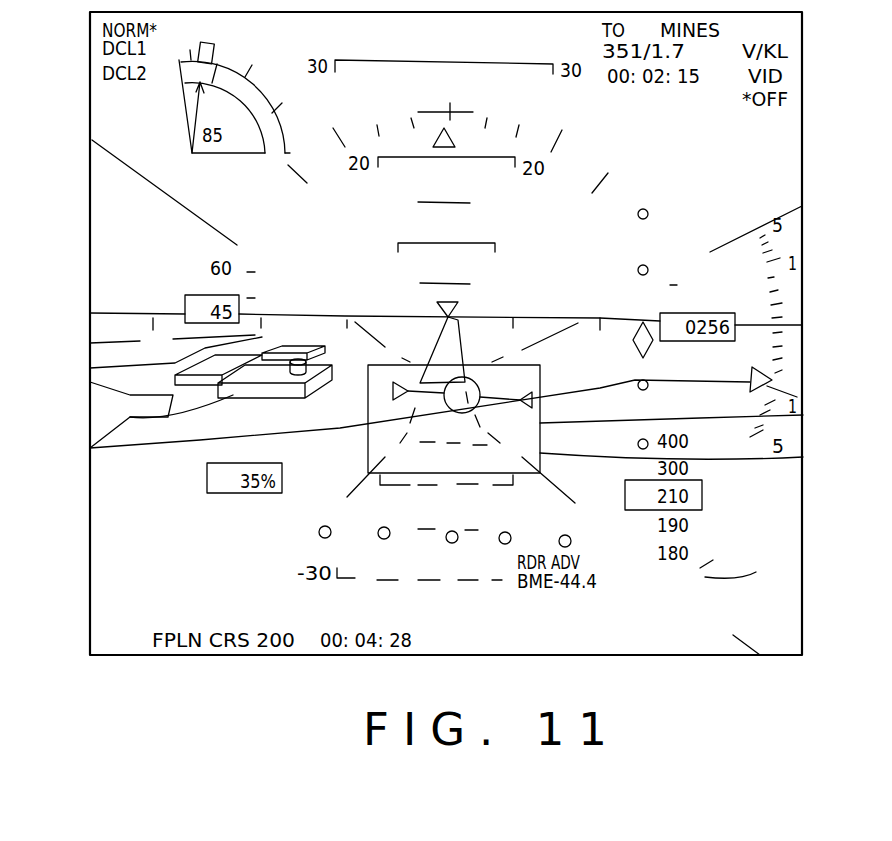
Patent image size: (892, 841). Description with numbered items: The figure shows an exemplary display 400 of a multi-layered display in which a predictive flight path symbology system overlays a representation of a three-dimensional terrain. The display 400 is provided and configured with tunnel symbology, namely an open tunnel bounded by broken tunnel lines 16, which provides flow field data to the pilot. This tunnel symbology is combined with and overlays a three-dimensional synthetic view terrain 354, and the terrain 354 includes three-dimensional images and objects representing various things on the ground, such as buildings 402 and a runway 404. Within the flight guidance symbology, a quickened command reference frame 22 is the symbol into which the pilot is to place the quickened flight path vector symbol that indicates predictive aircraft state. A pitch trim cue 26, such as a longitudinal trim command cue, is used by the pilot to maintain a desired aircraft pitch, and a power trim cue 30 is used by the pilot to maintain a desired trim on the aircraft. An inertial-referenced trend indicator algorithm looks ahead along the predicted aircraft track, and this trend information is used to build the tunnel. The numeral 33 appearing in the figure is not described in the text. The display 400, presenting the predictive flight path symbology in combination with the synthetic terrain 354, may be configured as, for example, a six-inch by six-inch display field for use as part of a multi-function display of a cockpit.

The broken tunnel lines 16 is at (150, 183).
The quickened command reference frame symbol 22 is at (803, 457).
The pitch trim cue 26 is at (803, 415).
The power trim cue 30 is at (393, 400).
The road 33 is at (176, 391).
The three-dimensional synthetic view terrain 354 is at (756, 572).
The display 400 is at (675, 688).
The buildings 402 is at (90, 427).
The runway 404 is at (605, 316).